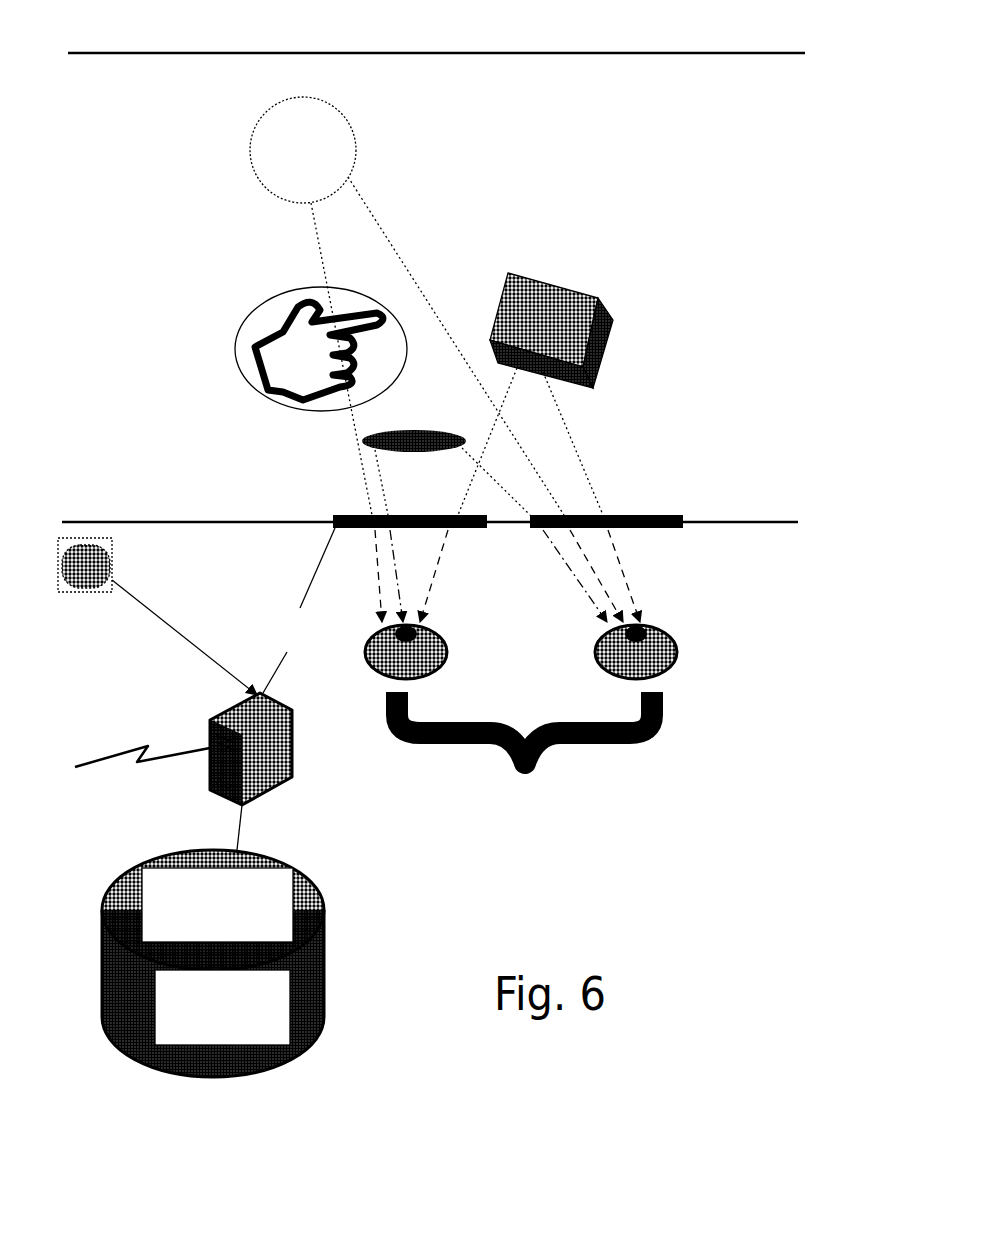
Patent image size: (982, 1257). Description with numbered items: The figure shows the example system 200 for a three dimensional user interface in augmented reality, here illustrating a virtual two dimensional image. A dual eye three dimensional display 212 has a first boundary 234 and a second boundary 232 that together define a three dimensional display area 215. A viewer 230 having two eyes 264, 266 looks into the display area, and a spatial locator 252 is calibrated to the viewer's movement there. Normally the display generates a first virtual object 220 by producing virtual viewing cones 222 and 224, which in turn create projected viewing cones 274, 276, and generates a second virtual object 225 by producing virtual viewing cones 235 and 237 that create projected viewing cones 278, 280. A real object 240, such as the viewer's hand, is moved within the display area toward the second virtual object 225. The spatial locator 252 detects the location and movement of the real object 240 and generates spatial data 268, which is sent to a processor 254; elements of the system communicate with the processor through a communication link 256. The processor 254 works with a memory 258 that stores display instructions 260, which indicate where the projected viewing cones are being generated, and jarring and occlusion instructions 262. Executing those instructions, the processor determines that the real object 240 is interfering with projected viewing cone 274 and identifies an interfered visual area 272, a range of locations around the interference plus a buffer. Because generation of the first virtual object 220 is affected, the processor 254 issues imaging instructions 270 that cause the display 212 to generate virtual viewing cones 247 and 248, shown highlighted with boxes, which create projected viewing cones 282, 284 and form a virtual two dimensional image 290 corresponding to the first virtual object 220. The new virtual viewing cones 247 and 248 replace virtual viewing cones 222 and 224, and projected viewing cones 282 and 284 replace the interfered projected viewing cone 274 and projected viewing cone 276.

The system 200 is at (340, 33).
The 3D display area 215 is at (563, 150).
The second boundary 232 is at (150, 53).
The first virtual object 220 is at (285, 146).
The projected viewing cone 274 is at (310, 243).
The projected viewing cone 276 is at (390, 232).
The interfered visual area 272 is at (240, 325).
The real object 240 is at (262, 380).
The second virtual object 225 is at (580, 330).
The projected viewing cone 278 is at (507, 392).
The projected viewing cone 280 is at (583, 450).
The virtual 2D image 290 is at (413, 437).
The projected viewing cone 282 is at (385, 492).
The projected viewing cone 284 is at (473, 455).
The first boundary 234 is at (182, 520).
The dual eye 3D display 212 is at (530, 530).
The virtual viewing cone 222 is at (375, 567).
The virtual viewing cone 235 is at (445, 553).
The virtual viewing cone 247 is at (398, 570).
The virtual viewing cone 248 is at (572, 578).
The virtual viewing cone 224 is at (592, 562).
The virtual viewing cone 237 is at (632, 587).
The eye 264 is at (435, 655).
The eye 266 is at (610, 652).
The viewer 230 is at (492, 768).
The spatial locator 252 is at (85, 593).
The spatial data 268 is at (200, 632).
The imaging instructions 270 is at (317, 653).
The processor 254 is at (223, 805).
The communication link 256 is at (138, 763).
The memory 258 is at (155, 1065).
The jarring and occlusion instructions 262 is at (148, 912).
The display instructions 260 is at (158, 1018).